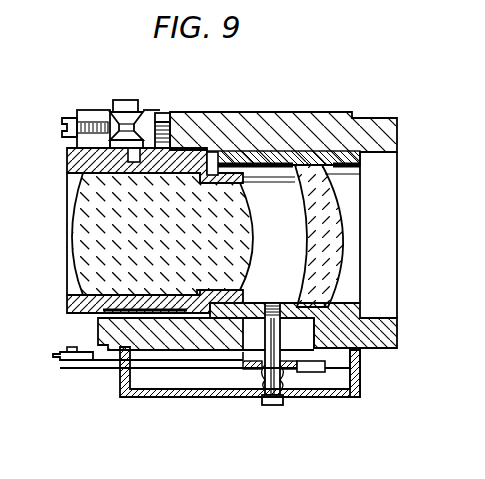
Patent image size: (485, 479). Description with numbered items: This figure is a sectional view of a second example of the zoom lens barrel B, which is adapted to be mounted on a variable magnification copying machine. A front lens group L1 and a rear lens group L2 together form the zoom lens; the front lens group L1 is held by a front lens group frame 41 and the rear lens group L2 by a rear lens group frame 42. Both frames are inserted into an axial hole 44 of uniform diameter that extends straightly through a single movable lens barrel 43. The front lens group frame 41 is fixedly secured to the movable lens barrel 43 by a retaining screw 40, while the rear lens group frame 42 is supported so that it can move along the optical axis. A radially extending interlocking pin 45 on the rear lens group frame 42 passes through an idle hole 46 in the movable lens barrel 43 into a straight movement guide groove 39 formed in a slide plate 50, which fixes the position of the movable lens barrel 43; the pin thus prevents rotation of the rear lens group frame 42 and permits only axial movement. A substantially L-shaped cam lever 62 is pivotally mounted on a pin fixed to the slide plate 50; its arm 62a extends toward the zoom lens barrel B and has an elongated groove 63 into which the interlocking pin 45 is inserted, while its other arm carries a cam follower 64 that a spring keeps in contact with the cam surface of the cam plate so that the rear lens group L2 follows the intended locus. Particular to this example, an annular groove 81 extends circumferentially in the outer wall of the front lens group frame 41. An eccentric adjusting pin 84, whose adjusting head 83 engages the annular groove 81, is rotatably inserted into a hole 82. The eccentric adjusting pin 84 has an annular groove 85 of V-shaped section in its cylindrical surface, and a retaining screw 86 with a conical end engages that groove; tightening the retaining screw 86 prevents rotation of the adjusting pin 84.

The zoom lens barrel B is at (428, 118).
The straight movement guide groove 39 is at (305, 393).
The retaining screw 40 is at (168, 118).
The front lens group frame 41 is at (70, 161).
The rear lens group frame 42 is at (367, 160).
The movable lens barrel 43 is at (263, 117).
The axial hole 44 is at (380, 318).
The interlocking pin 45 is at (279, 378).
The idle hole 46 is at (358, 369).
The slide plate 50 is at (143, 397).
The cam lever 62 is at (193, 369).
The arm 62a is at (332, 397).
The elongated groove 63 is at (265, 370).
The cam follower 64 is at (60, 352).
The annular groove 81 is at (135, 295).
The hole 82 is at (140, 109).
The adjusting head 83 is at (132, 167).
The eccentric adjusting pin 84 is at (136, 100).
The annular groove 85 is at (100, 110).
The retaining screw 86 is at (62, 118).
The front lens group L1 is at (85, 228).
The rear lens group L2 is at (345, 246).